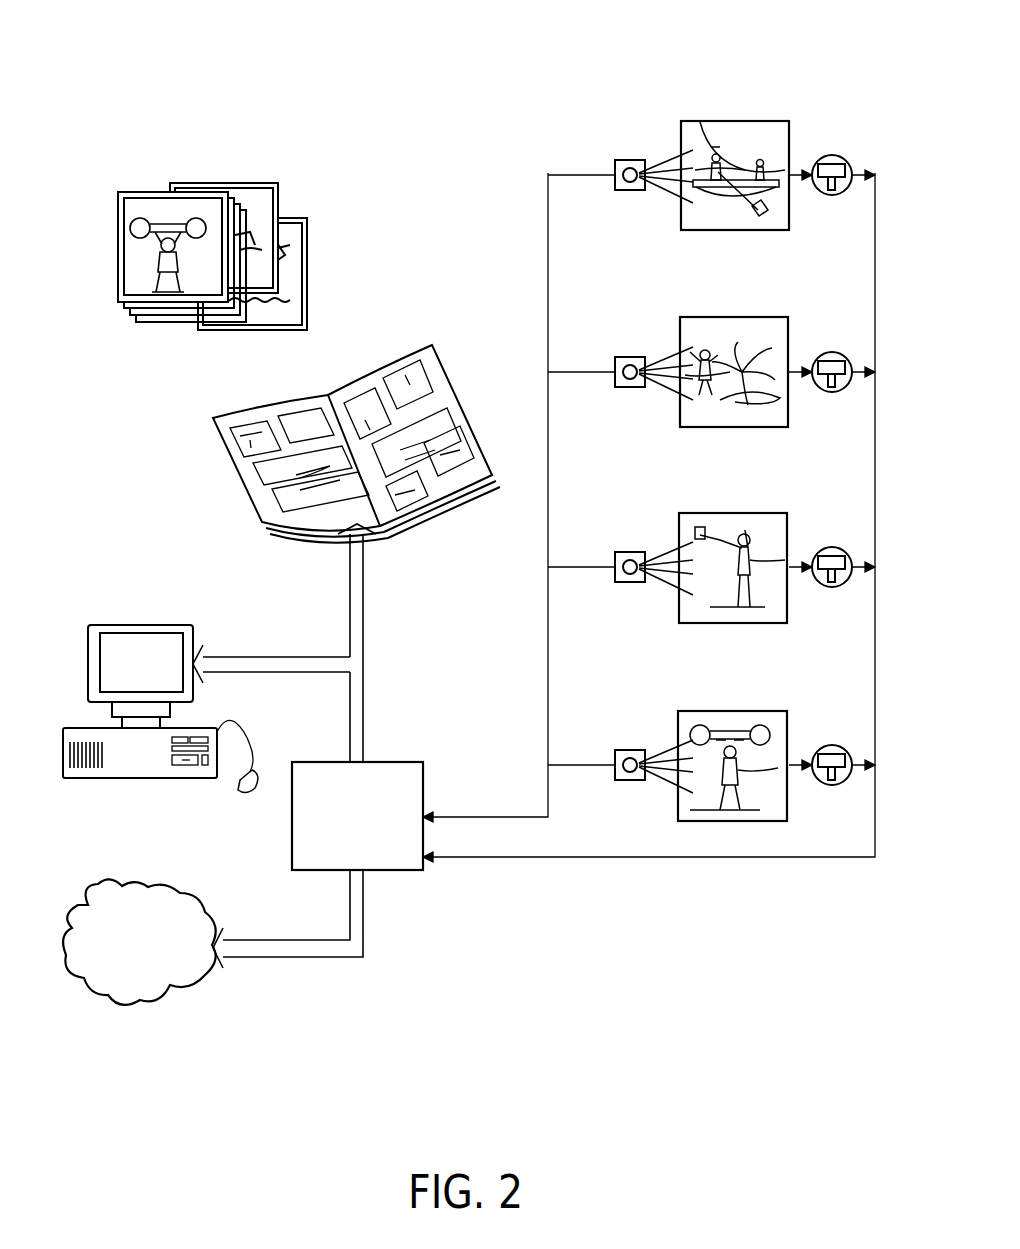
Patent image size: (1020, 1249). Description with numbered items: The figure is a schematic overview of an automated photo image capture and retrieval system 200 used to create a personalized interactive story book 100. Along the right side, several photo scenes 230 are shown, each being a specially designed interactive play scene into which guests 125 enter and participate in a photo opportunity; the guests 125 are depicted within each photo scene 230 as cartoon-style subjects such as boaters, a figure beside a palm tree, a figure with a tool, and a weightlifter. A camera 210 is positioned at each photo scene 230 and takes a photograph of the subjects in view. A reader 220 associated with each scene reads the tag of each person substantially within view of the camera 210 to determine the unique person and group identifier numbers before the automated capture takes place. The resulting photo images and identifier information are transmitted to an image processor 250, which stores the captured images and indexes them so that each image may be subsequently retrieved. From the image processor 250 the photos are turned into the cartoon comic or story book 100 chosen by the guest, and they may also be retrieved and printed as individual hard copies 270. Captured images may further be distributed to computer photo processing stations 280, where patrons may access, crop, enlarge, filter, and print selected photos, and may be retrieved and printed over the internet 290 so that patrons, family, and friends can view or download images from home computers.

The interactive story book 100 is at (215, 473).
The guests 125 is at (740, 167).
The automated photo image capture and retrieval system 200 is at (477, 125).
The camera 210 is at (632, 160).
The reader 220 is at (834, 152).
The photo scene 230 is at (766, 116).
The image processor 250 is at (388, 762).
The individual hard copies 270 is at (303, 197).
The computer photo processing stations 280 is at (147, 624).
The internet 290 is at (140, 888).